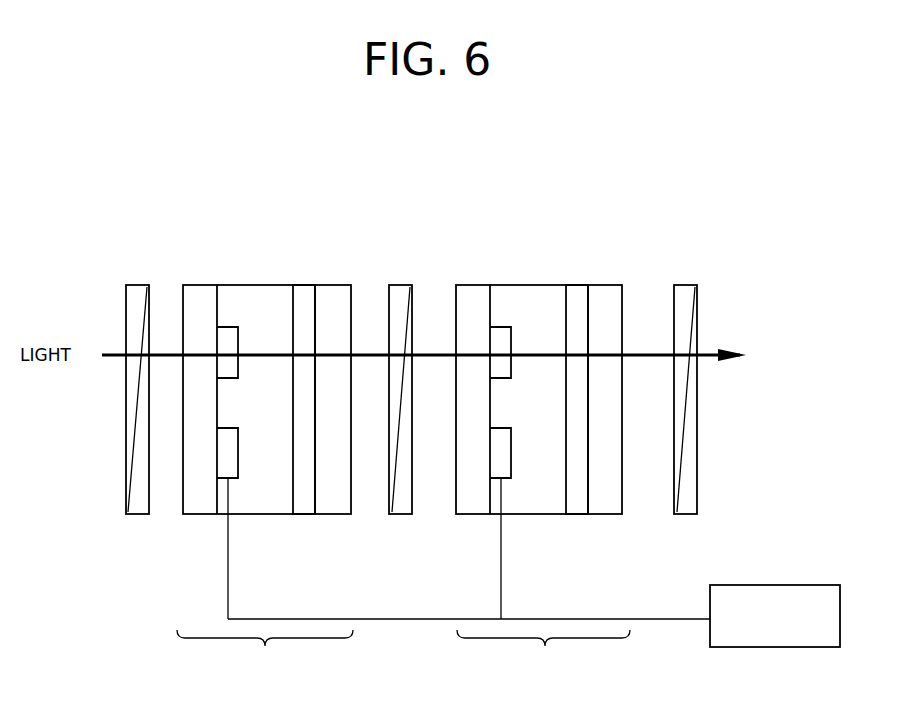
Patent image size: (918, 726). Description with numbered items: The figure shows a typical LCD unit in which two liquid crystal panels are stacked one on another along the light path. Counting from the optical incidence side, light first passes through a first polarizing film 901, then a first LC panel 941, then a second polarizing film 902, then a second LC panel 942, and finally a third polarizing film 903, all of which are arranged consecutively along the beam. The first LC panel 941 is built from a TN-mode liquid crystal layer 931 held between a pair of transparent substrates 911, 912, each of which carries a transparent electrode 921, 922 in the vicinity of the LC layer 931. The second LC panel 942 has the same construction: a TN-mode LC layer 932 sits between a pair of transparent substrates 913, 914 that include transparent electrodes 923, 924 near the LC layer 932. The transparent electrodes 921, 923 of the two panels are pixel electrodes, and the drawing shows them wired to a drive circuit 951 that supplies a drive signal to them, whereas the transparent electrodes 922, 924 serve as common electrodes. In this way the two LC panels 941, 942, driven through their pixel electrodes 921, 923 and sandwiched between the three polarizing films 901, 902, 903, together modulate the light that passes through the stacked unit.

The first polarizing film 901 is at (138, 298).
The second polarizing film 902 is at (397, 297).
The third polarizing film 903 is at (687, 295).
The transparent substrate 911 is at (199, 507).
The transparent substrate 912 is at (333, 508).
The transparent substrate 913 is at (472, 507).
The transparent substrate 914 is at (600, 508).
The transparent electrode 921 is at (223, 337).
The transparent electrode 922 is at (305, 298).
The transparent electrode 923 is at (498, 337).
The transparent electrode 924 is at (577, 295).
The TN-mode liquid crystal layer 931 is at (267, 505).
The TN-mode LC layer 932 is at (535, 507).
The first LC panel 941 is at (268, 451).
The second LC panel 942 is at (541, 451).
The drive circuit 951 is at (770, 585).